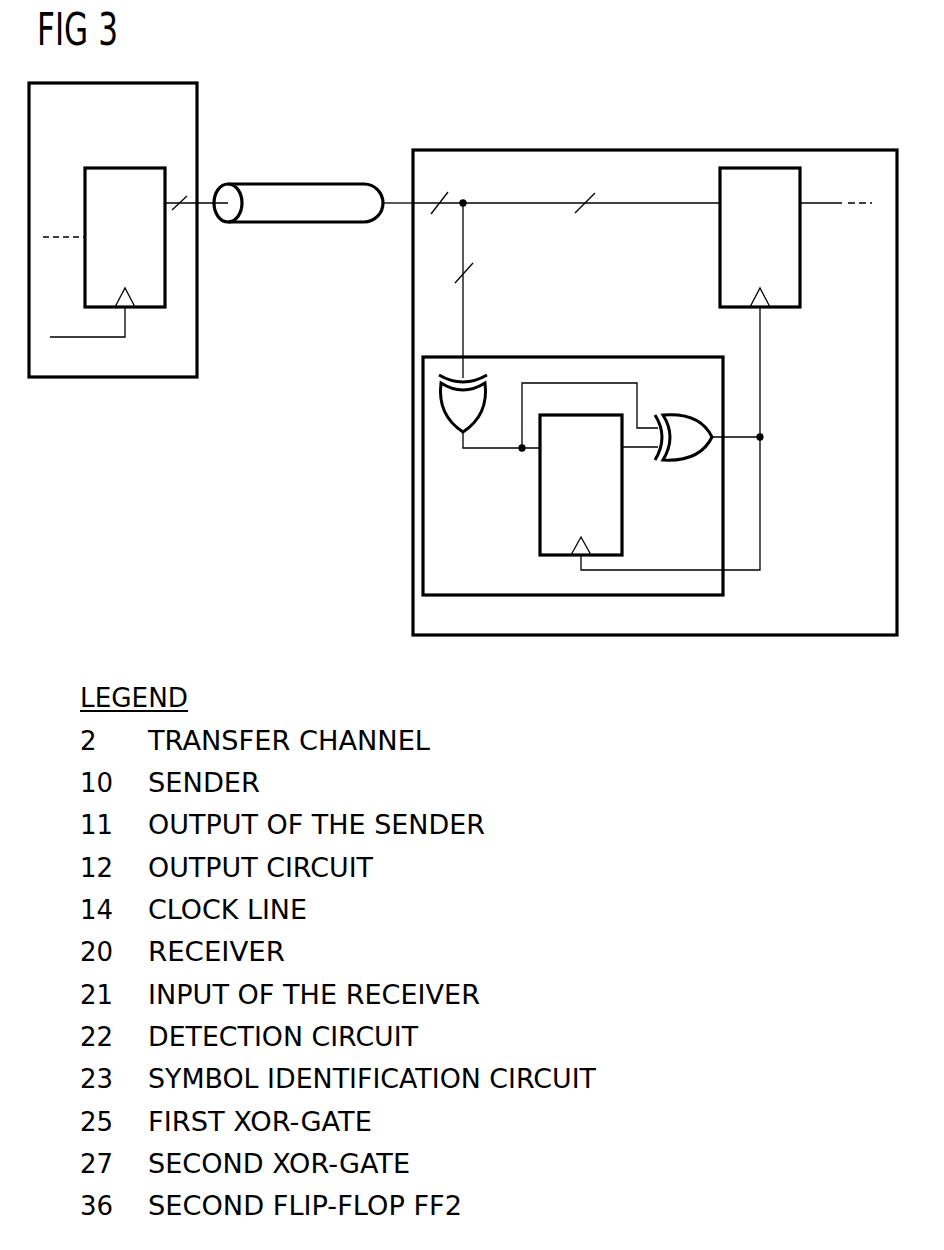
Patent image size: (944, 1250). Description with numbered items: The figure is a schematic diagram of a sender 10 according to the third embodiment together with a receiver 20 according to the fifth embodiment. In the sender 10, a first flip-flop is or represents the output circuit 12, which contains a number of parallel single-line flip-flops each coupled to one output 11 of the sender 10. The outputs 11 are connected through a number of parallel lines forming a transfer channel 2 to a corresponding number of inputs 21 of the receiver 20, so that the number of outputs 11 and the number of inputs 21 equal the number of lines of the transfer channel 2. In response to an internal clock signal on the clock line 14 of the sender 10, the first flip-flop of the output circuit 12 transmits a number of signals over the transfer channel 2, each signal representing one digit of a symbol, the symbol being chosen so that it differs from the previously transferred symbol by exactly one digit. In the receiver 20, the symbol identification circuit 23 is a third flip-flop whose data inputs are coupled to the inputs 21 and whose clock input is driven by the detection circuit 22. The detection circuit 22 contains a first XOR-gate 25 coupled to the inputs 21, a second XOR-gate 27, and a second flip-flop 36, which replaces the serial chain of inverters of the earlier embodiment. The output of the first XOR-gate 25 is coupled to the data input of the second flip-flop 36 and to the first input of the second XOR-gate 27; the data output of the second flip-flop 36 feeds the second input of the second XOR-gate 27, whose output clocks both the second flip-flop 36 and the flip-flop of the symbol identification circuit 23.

The transfer channel 2 is at (296, 232).
The sender 10 is at (155, 378).
The output of the sender 11 is at (197, 198).
The output circuit 12 is at (118, 167).
The clock line 14 is at (110, 340).
The receiver 20 is at (653, 148).
The input of the receiver 21 is at (410, 198).
The detection circuit 22 is at (573, 355).
The symbol identification circuit 23 is at (783, 308).
The first XOR-gate 25 is at (440, 396).
The second XOR-gate 27 is at (680, 462).
The second flip-flop FF2 36 is at (538, 510).